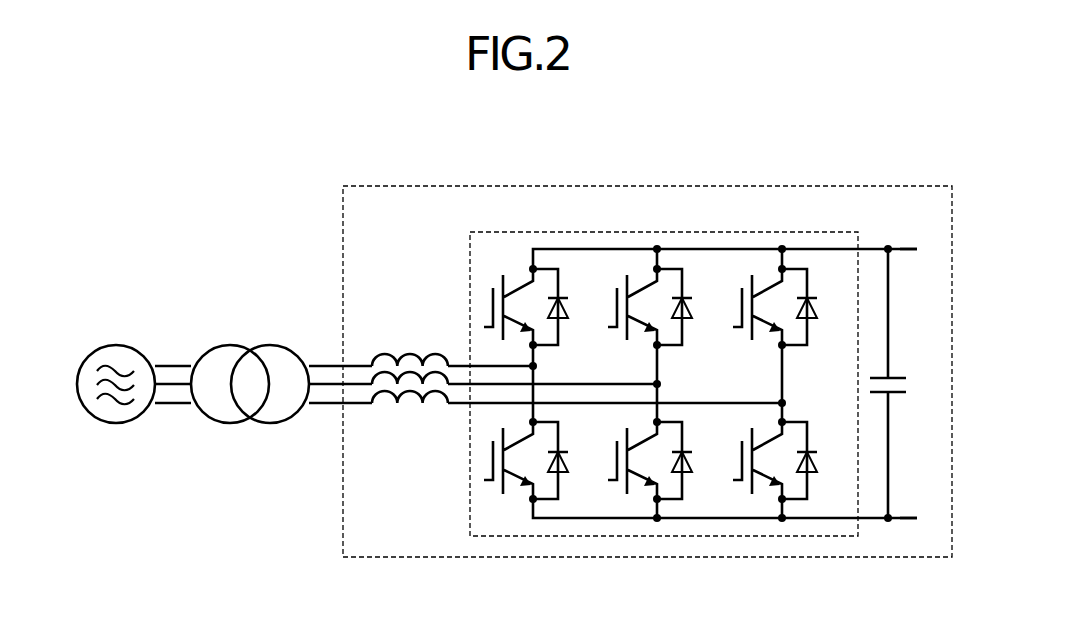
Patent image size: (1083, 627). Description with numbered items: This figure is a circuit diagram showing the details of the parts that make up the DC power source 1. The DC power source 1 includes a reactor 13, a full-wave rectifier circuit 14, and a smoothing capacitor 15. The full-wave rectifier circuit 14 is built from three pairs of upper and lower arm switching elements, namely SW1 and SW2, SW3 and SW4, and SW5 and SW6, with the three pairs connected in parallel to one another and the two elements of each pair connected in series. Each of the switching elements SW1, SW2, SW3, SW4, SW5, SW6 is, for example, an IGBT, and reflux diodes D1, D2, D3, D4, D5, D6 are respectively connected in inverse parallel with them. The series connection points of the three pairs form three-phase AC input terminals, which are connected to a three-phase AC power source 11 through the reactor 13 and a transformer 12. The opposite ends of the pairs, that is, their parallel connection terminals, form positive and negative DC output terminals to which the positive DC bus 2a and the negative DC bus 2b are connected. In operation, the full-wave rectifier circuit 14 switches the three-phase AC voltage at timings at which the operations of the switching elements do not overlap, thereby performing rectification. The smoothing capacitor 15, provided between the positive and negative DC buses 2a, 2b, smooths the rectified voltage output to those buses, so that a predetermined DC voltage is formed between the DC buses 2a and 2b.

The DC power source 1 is at (676, 186).
The positive DC bus 2a is at (917, 249).
The negative DC bus 2b is at (919, 503).
The three-phase AC power source 11 is at (118, 345).
The transformer 12 is at (273, 345).
The reactor 13 is at (401, 353).
The full-wave rectifier circuit 14 is at (470, 260).
The smoothing capacitor 15 is at (902, 378).
The switching element SW1 is at (523, 290).
The switching element SW2 is at (519, 485).
The switching element SW3 is at (643, 287).
The switching element SW4 is at (643, 485).
The switching element SW5 is at (767, 287).
The switching element SW6 is at (768, 485).
The reflux diode D1 is at (566, 307).
The reflux diode D2 is at (566, 460).
The reflux diode D3 is at (690, 307).
The reflux diode D4 is at (690, 460).
The reflux diode D5 is at (815, 307).
The reflux diode D6 is at (815, 460).